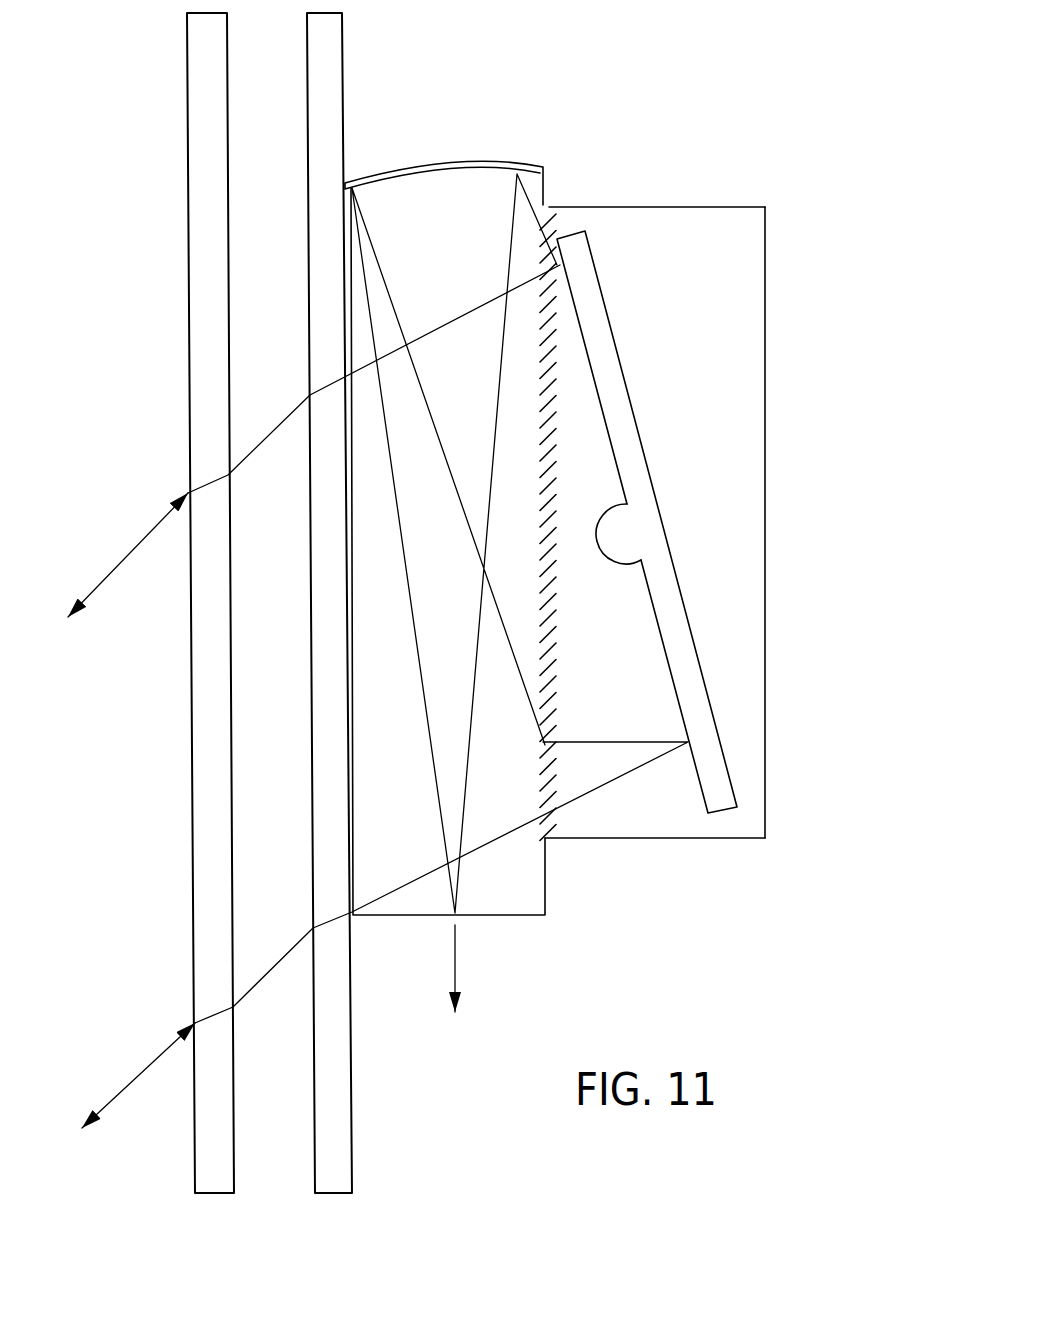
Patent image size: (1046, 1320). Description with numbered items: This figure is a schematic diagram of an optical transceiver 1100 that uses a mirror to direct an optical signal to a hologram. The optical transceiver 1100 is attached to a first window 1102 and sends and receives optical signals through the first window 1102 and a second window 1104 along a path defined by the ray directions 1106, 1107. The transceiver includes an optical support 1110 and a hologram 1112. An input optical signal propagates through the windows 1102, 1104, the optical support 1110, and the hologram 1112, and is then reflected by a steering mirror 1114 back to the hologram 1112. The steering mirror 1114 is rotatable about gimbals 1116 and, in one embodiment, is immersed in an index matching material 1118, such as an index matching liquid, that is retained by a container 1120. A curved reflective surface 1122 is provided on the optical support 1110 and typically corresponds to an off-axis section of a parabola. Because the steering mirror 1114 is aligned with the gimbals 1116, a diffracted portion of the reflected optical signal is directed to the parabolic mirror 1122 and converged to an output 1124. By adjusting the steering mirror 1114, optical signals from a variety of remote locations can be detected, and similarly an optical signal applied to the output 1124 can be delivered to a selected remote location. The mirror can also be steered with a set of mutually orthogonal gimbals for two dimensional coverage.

The optical transceiver 1100 is at (705, 190).
The first window 1102 is at (331, 61).
The second window 1104 is at (200, 83).
The ray direction 1106 is at (120, 562).
The ray direction 1107 is at (120, 1090).
The optical support 1110 is at (403, 898).
The hologram 1112 is at (557, 675).
The steering mirror 1114 is at (730, 808).
The gimbals 1116 is at (635, 535).
The index matching material 1118 is at (697, 380).
The container 1120 is at (765, 258).
The curved reflective surface 1122 is at (433, 168).
The output 1124 is at (457, 920).